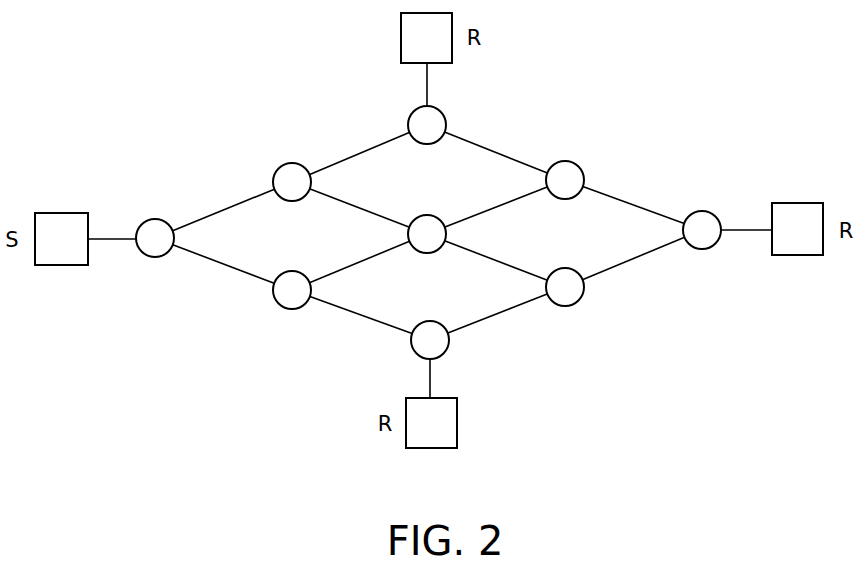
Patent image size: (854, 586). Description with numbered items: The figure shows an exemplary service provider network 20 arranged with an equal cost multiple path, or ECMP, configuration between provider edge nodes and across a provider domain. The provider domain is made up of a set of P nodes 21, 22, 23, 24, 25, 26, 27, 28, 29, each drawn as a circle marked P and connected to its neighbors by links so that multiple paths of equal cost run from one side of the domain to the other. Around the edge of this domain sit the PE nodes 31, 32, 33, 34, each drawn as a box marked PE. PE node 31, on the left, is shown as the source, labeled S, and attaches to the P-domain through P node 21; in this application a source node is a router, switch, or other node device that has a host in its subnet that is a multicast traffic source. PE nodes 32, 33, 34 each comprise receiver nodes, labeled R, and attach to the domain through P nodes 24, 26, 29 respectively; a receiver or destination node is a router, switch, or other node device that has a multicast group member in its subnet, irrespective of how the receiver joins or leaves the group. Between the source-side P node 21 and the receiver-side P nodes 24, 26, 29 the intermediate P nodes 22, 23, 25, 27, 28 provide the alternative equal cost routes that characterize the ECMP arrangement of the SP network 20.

The SP network 20 is at (648, 70).
The P node 21 is at (155, 257).
The P node 22 is at (285, 308).
The P node 23 is at (286, 163).
The P node 24 is at (448, 354).
The P node 25 is at (428, 253).
The P node 26 is at (443, 111).
The P node 27 is at (568, 161).
The P node 28 is at (572, 306).
The P node 29 is at (705, 250).
The PE node 31 is at (60, 212).
The PE node 32 is at (458, 420).
The PE node 33 is at (401, 33).
The PE node 34 is at (798, 203).